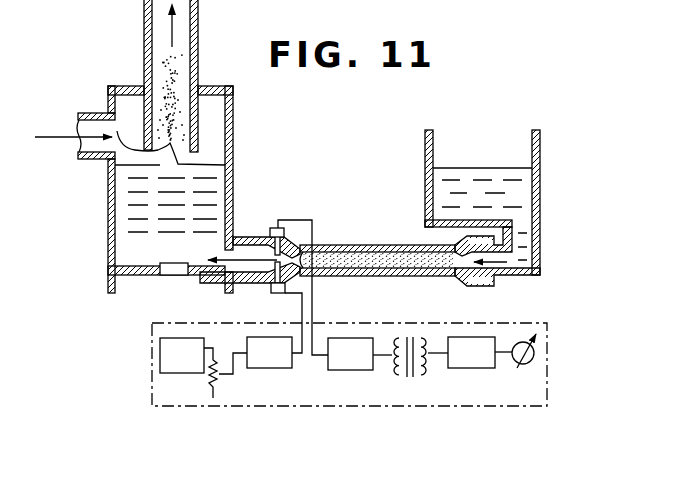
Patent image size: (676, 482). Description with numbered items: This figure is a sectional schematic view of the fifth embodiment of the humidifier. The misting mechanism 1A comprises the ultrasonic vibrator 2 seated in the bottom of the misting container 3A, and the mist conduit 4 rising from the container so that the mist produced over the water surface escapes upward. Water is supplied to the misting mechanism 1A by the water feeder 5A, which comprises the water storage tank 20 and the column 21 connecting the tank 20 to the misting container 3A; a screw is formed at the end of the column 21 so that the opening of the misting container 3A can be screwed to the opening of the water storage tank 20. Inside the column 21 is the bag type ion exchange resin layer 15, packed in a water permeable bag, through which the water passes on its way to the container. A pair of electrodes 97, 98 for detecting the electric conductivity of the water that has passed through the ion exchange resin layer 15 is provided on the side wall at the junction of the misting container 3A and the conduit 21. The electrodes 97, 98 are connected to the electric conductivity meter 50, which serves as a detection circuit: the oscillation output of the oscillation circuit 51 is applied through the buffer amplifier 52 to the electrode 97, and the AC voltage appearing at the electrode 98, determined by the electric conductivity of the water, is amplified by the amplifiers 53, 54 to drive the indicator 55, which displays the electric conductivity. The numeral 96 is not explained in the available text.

The exhaust duct 96 is at (421, 13).
The mist conduit 4 is at (200, 55).
The misting container 3A is at (108, 210).
The ultrasonic vibrator 2 is at (172, 277).
The misting mechanism 1A is at (139, 169).
The column 21 is at (357, 277).
The electrode 98 is at (275, 228).
The electrode 97 is at (272, 289).
The bag type ion exchange resin layer 15 is at (406, 279).
The water storage tank 20 is at (425, 192).
The water feeder 5A is at (483, 224).
The electric conductivity meter 50 is at (349, 390).
The oscillation circuit 51 is at (182, 372).
The buffer amplifier 52 is at (270, 369).
The amplifier 53 is at (355, 371).
The amplifier 54 is at (472, 369).
The indicator 55 is at (519, 370).